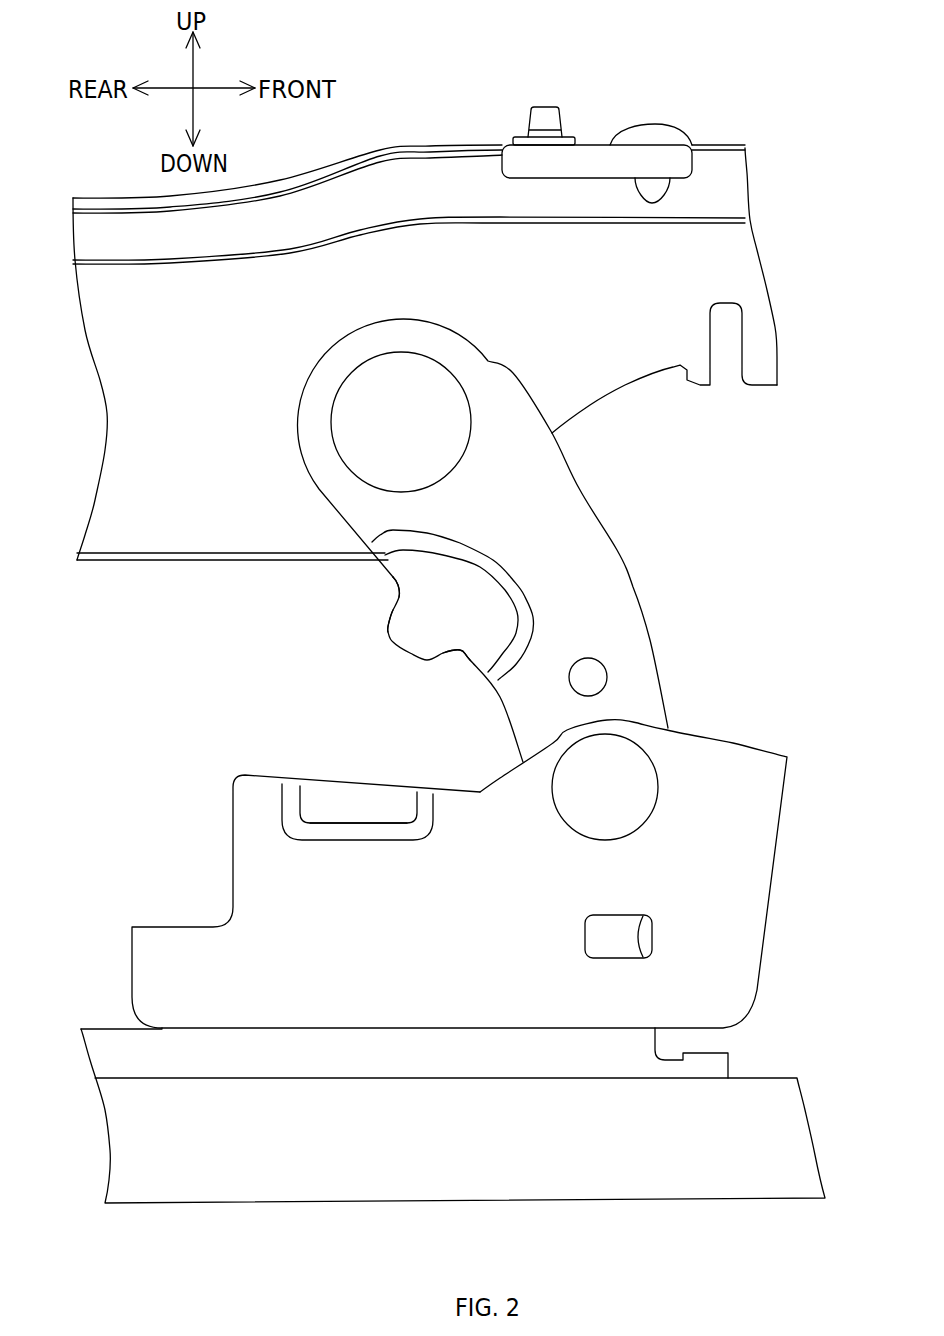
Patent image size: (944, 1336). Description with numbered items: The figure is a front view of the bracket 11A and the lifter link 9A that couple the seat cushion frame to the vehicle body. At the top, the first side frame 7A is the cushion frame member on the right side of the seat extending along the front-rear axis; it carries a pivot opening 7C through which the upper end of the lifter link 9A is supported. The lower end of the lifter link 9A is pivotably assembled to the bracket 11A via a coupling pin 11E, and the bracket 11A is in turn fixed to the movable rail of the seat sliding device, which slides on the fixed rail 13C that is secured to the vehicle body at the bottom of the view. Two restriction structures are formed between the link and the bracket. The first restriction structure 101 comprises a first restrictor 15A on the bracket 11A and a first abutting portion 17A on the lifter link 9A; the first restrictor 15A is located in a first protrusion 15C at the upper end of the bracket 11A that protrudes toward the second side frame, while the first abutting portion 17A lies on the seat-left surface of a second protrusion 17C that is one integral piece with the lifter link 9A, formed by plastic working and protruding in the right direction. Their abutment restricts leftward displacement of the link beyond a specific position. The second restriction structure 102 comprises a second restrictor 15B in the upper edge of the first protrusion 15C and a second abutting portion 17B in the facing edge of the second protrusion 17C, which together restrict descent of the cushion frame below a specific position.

The first side frame 7A is at (462, 145).
The pivot hole 7C is at (358, 432).
The lifter link 9A is at (473, 540).
The bracket 11A is at (233, 817).
The coupling pin 11E is at (627, 783).
The fixed rail 13C is at (435, 1205).
The first restrictor 15A is at (315, 793).
The second restrictor 15B is at (263, 775).
The first protrusion 15C is at (355, 797).
The first abutting portion 17A is at (383, 615).
The second abutting portion 17B is at (393, 580).
The second protrusion 17C is at (413, 637).
The first restriction structure 101 is at (715, 487).
The second restriction structure 102 is at (452, 875).